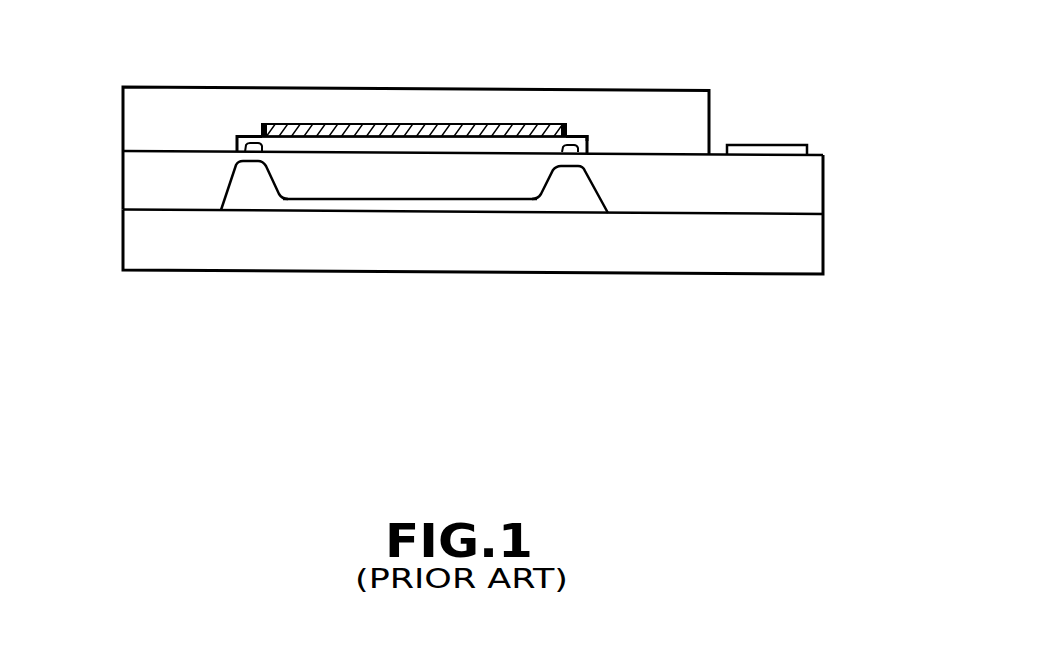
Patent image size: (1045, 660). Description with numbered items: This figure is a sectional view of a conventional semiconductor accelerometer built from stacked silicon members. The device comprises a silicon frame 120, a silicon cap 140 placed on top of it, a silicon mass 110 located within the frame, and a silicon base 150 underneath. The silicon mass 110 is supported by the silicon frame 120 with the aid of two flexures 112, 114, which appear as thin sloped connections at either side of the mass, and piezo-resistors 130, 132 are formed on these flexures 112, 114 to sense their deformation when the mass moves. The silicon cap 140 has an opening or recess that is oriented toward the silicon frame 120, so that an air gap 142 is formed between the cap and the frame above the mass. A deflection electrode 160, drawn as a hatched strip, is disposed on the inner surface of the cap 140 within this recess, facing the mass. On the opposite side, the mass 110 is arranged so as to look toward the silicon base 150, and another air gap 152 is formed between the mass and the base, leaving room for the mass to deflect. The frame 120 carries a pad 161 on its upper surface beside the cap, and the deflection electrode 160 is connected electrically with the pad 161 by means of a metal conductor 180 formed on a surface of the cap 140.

The silicon mass 110 is at (357, 181).
The flexure 112 is at (250, 164).
The flexure 114 is at (572, 168).
The silicon frame 120 is at (810, 183).
The piezo-resistor 130 is at (250, 136).
The piezo-resistor 132 is at (575, 137).
The silicon cap 140 is at (682, 108).
The air gap 142 is at (328, 143).
The silicon base 150 is at (810, 253).
The air gap 152 is at (430, 212).
The deflection electrode 160 is at (450, 125).
The pad 161 is at (784, 150).
The metal conductor 180 is at (592, 137).